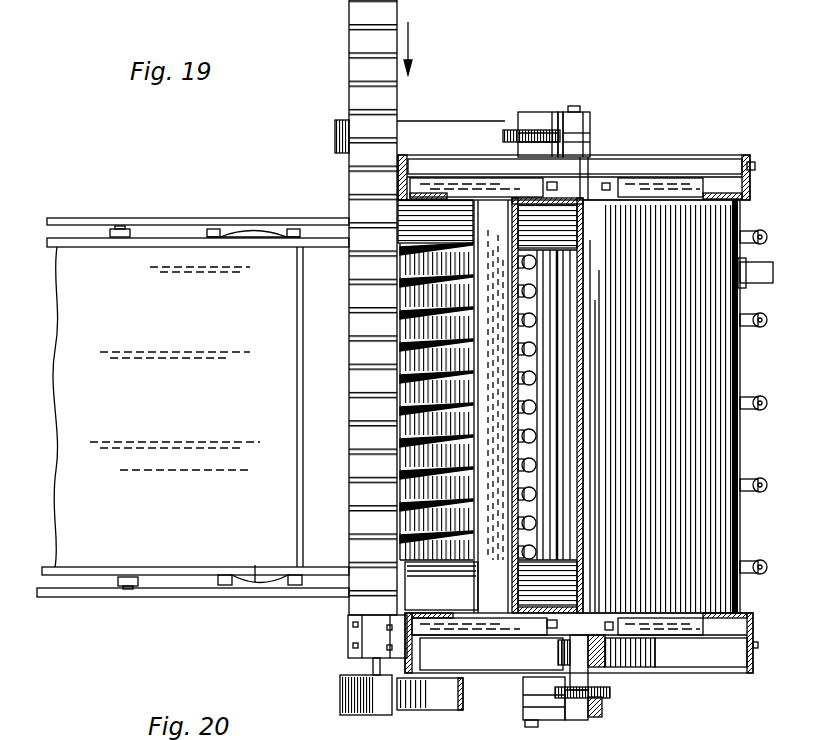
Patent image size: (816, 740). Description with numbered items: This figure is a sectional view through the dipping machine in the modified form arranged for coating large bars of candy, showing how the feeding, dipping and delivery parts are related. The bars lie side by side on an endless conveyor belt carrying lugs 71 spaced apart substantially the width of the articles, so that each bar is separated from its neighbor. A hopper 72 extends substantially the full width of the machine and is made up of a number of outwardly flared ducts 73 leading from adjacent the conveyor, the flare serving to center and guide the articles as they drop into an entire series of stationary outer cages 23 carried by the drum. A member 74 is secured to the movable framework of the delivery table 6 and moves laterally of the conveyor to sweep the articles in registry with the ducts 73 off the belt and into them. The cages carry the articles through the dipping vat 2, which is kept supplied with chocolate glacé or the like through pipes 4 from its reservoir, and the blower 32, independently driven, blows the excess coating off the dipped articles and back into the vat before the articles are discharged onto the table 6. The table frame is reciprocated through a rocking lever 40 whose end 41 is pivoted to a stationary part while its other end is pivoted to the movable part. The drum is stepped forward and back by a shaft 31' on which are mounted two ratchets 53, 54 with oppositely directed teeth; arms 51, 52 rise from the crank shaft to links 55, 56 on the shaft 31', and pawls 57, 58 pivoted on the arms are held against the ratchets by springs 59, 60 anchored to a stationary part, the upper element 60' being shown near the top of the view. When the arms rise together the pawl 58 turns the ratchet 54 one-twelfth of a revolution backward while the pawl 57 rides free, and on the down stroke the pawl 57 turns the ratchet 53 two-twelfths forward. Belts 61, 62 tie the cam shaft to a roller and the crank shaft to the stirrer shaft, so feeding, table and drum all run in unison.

The lugs 71 is at (352, 86).
The upper shaft 60' is at (451, 110).
The arm 51 is at (541, 127).
The ratchet 53 is at (513, 129).
The link 55 is at (576, 112).
The pawl 57 is at (588, 134).
The spring 59 is at (592, 157).
The outwardly flared ducts 73 is at (453, 360).
The member 74 is at (348, 377).
The blower 32 is at (586, 567).
The stationary outer cage 23 is at (534, 326).
The dipping or coating vat 2 is at (740, 540).
The pipes 4 is at (753, 231).
The hopper 72 is at (441, 586).
The spring 60 is at (491, 659).
The belt 62 is at (681, 652).
The shaft 31' is at (562, 662).
The ratchet 54 is at (612, 696).
The pawl 58 is at (528, 695).
The link 56 is at (592, 722).
The arm 52 is at (548, 705).
The belt 61 is at (443, 703).
The delivery table 6 is at (155, 247).
The rocking lever 40 is at (119, 240).
The pivot end 41 is at (121, 228).